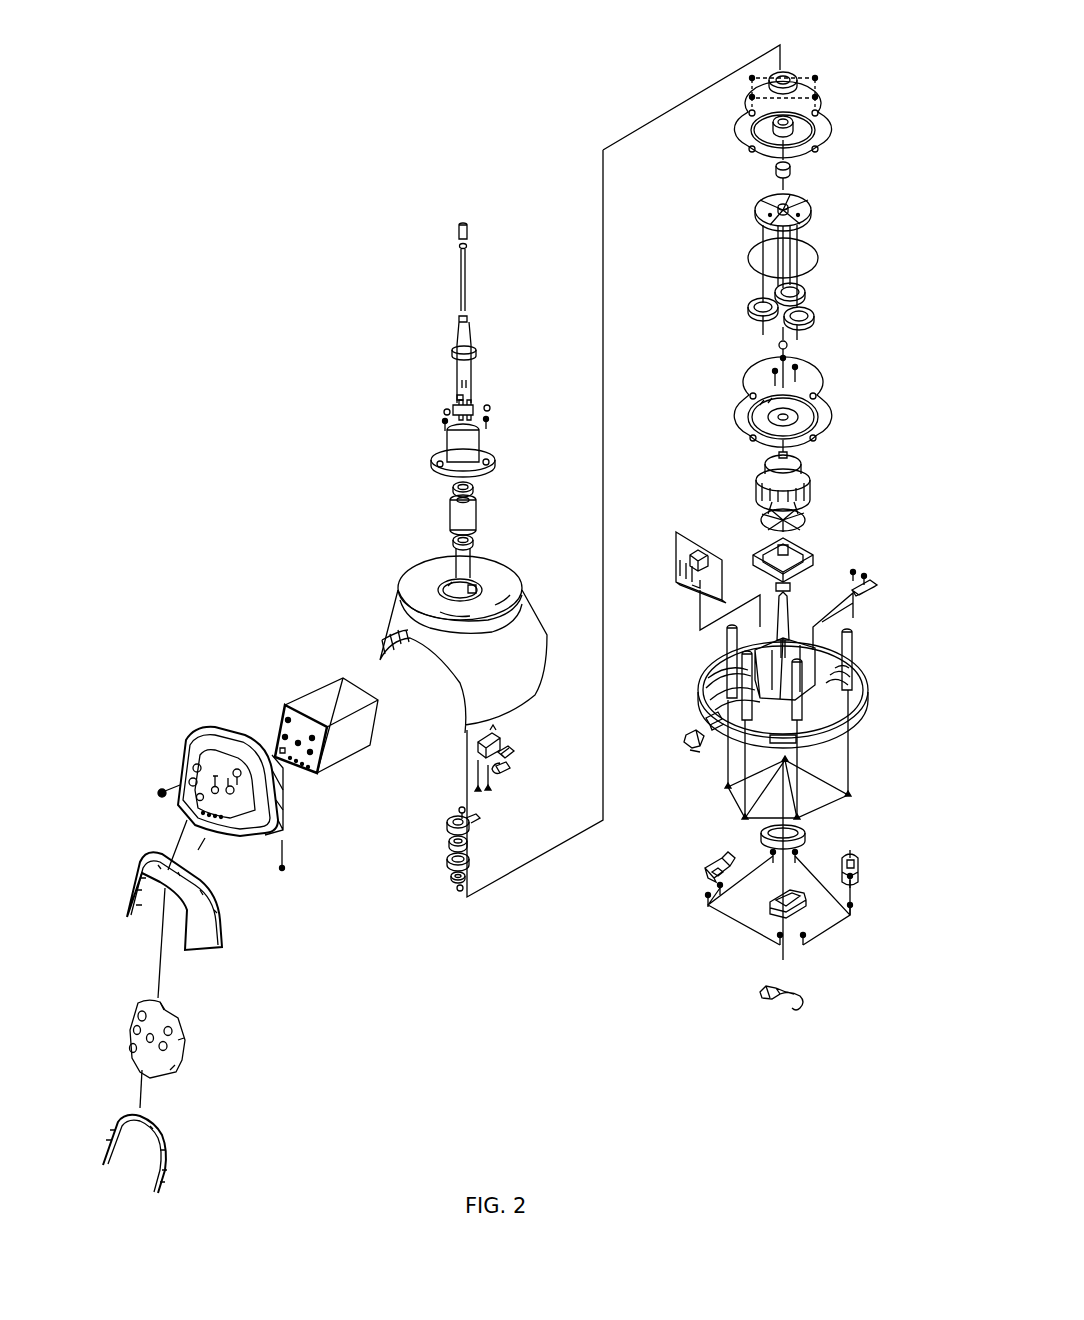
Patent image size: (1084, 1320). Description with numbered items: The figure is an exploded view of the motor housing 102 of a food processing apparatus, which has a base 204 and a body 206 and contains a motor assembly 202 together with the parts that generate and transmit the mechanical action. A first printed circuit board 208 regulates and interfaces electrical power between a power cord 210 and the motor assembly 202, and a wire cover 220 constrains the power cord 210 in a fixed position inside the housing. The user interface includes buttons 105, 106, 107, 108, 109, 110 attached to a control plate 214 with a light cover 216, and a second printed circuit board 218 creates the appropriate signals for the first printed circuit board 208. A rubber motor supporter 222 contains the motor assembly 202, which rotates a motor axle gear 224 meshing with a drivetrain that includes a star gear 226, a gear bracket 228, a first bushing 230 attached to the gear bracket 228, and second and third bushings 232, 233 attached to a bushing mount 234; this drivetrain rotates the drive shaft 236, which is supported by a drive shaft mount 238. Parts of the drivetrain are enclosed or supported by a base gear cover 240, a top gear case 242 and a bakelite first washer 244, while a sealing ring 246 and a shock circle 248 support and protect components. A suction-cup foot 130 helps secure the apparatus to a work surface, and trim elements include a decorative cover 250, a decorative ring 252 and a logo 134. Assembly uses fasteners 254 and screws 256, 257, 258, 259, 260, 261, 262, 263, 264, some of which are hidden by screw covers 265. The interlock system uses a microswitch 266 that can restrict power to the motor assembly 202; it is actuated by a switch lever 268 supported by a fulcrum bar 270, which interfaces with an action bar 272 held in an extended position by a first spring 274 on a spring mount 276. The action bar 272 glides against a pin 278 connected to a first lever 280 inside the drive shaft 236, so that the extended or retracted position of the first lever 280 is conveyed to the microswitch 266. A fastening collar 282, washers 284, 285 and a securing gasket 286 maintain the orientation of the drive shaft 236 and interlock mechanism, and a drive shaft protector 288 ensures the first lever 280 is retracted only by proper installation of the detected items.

The motor housing 102 is at (212, 93).
The button 105 is at (140, 1012).
The button 106 is at (172, 1031).
The button 107 is at (166, 1050).
The button 108 is at (152, 1035).
The button 109 is at (134, 1028).
The button 110 is at (130, 1047).
The foot 130 is at (860, 865).
The logo 134 is at (684, 738).
The motor assembly 202 is at (810, 487).
The base 204 is at (866, 680).
The body 206 is at (512, 578).
The first printed circuit board 208 is at (677, 537).
The power cord 210 is at (800, 993).
The control plate 214 is at (212, 834).
The light cover 216 is at (160, 789).
The second printed circuit board 218 is at (311, 780).
The wire cover 220 is at (864, 592).
The motor supporter 222 is at (810, 556).
The motor axle gear 224 is at (778, 345).
The gear 226 is at (815, 306).
The gear bracket 228 is at (813, 210).
The first bushing 230 is at (796, 170).
The second bushing 232 is at (475, 490).
The third bushing 233 is at (475, 540).
The bushing mount 234 is at (474, 515).
The drive shaft 236 is at (474, 348).
The drive shaft mount 238 is at (490, 462).
The base gear cover 240 is at (823, 412).
The top gear case 242 is at (823, 135).
The first washer 244 is at (472, 410).
The sealing ring 246 is at (820, 258).
The shock circle 248 is at (792, 72).
The decorative cover 250 is at (215, 933).
The decorative ring 252 is at (168, 1165).
The fastener 254 is at (700, 721).
The screw 256 is at (805, 940).
The screw 257 is at (850, 795).
The screw 258 is at (858, 566).
The screw 259 is at (798, 366).
The screw 260 is at (488, 418).
The screw 261 is at (283, 868).
The screw 262 is at (370, 745).
The screw 263 is at (490, 789).
The screw 264 is at (817, 99).
The screw cover 265 is at (490, 408).
The microswitch 266 is at (510, 752).
The switch lever 268 is at (512, 768).
The fulcrum bar 270 is at (506, 738).
The action bar 272 is at (446, 823).
The first spring 274 is at (448, 843).
The spring mount 276 is at (446, 860).
The pin 278 is at (460, 810).
The first lever 280 is at (465, 283).
The fastening collar 282 is at (458, 890).
The washer 284 is at (450, 877).
The washer 285 is at (444, 411).
The securing gasket 286 is at (468, 246).
The drive shaft protector 288 is at (469, 232).